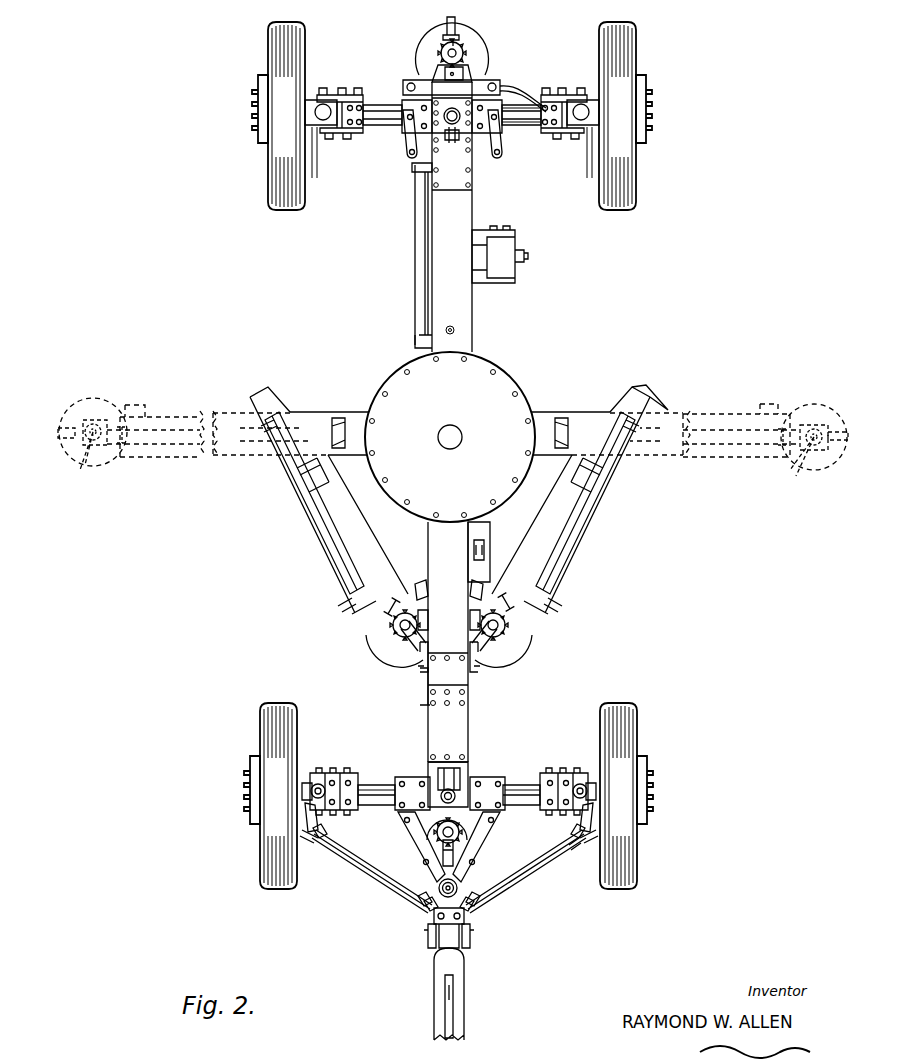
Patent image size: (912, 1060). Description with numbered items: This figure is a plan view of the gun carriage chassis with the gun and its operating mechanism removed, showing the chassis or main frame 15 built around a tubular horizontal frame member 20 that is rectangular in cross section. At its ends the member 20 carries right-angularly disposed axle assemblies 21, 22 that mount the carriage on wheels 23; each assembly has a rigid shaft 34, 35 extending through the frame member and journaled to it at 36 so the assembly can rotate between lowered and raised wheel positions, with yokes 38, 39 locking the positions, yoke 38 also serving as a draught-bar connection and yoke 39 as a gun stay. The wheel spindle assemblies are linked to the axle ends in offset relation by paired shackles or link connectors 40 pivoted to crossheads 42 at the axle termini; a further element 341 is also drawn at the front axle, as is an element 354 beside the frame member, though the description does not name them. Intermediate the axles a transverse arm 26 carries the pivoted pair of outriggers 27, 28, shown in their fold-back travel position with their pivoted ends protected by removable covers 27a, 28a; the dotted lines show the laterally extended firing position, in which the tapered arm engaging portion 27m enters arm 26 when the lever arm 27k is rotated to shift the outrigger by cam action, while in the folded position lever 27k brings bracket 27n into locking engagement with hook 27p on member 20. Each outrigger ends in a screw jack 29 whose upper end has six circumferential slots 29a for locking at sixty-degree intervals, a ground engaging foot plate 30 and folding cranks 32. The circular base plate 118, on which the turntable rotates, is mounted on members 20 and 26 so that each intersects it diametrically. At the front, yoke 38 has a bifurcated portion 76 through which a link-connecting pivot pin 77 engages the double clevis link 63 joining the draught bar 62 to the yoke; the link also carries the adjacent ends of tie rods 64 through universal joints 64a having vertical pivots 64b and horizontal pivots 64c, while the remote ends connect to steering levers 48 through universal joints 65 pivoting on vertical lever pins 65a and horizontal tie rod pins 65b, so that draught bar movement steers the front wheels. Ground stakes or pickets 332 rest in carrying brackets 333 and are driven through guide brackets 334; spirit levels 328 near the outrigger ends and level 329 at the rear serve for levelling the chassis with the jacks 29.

The chassis or main frame 15 is at (404, 306).
The tubular horizontal frame member 20 is at (470, 296).
The front axle assembly 21 is at (522, 783).
The axle assembly 22 is at (387, 142).
The wheels 23 is at (275, 52).
The transverse arm 26 is at (352, 416).
The outrigger 27 is at (740, 410).
The cover 27a is at (638, 392).
The lever arm 27k is at (310, 498).
The tapered arm engaging portion 27m is at (652, 408).
The bracket 27n is at (427, 594).
The hook 27p is at (428, 620).
The outrigger 28 is at (160, 410).
The cover 28a is at (262, 390).
The screw jack 29 is at (96, 424).
The circumferential slots 29a is at (440, 50).
The foot plate 30 is at (478, 52).
The cranks 32 is at (458, 30).
The shaft 34 is at (382, 786).
The shaft 35 is at (518, 122).
The journal 36 is at (420, 136).
The yoke 38 is at (460, 840).
The yoke 39 is at (406, 140).
The shackles or link connectors 40 is at (352, 90).
The crossheads 42 is at (380, 106).
The steering levers 48 is at (312, 774).
The draught bar 62 is at (465, 1004).
The double clevis link 63 is at (464, 918).
The tie rods 64 is at (358, 880).
The universal joints 64a is at (437, 918).
The vertical pivots 64b is at (428, 934).
The horizontal pivots 64c is at (420, 902).
The universal joints 65 is at (304, 844).
The vertical lever pins 65a is at (308, 852).
The horizontal tie rod pins 65b is at (580, 850).
The bifurcated portion 76 is at (432, 880).
The link-connecting pivot pin 77 is at (458, 882).
The circular base plate 118 is at (492, 386).
The spirit levels 328 is at (394, 598).
The level 329 is at (454, 142).
The ground stakes or pickets 332 is at (414, 244).
The carrying brackets 333 is at (416, 174).
The guide brackets 334 is at (420, 700).
The curved link 341 is at (526, 95).
The housing 354 is at (522, 530).